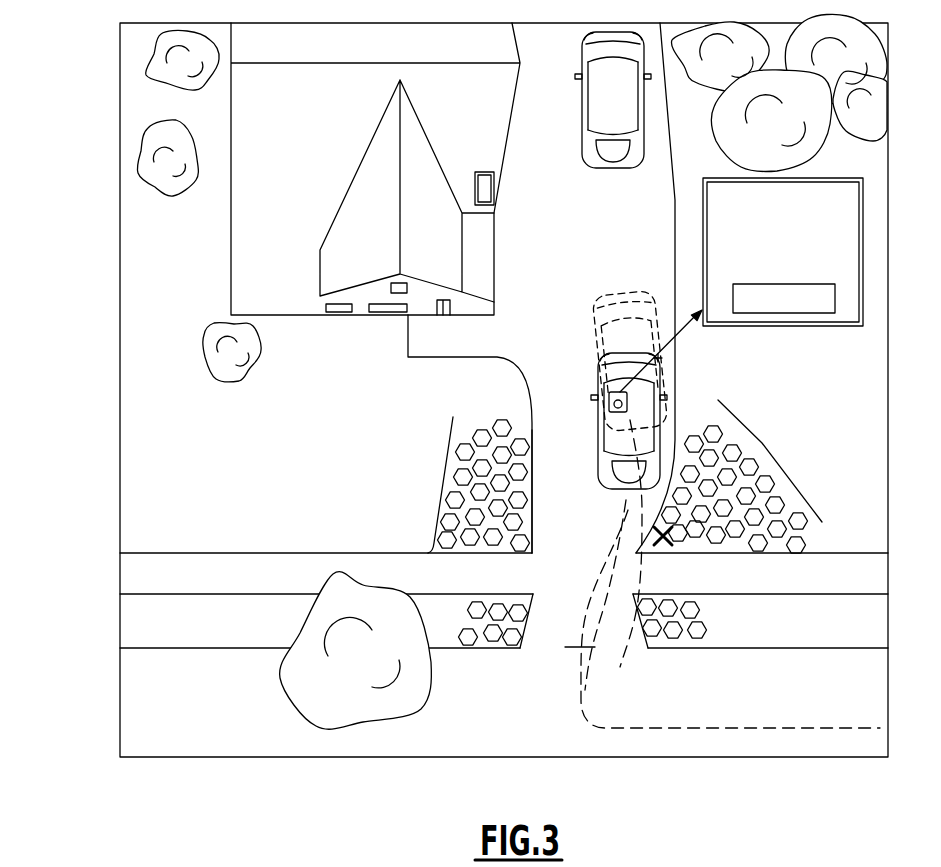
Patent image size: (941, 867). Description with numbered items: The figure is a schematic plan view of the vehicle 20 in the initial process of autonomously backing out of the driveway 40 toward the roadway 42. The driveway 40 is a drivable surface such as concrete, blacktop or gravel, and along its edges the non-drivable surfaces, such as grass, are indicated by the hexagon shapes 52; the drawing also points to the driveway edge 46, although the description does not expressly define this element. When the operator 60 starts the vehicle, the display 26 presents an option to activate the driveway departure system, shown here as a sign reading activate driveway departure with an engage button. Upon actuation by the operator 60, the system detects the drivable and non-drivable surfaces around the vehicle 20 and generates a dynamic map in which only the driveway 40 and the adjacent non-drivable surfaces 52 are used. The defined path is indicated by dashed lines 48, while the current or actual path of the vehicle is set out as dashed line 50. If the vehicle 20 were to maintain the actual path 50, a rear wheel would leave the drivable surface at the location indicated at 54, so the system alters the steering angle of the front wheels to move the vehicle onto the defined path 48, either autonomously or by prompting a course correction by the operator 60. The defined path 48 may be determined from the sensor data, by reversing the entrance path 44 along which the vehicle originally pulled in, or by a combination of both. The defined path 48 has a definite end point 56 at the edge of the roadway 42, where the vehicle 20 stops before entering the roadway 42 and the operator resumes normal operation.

The vehicle 20 is at (637, 378).
The display 26 is at (850, 213).
The driveway 40 is at (574, 356).
The roadway 42 is at (458, 735).
The entrance path 44 is at (736, 716).
The driveway edge 46 is at (546, 467).
The defined path 48 is at (586, 572).
The actual path 50 is at (652, 578).
The hexagon shapes 52 is at (438, 483).
The location 54 is at (668, 535).
The end point 56 is at (567, 660).
The operator 60 is at (593, 400).